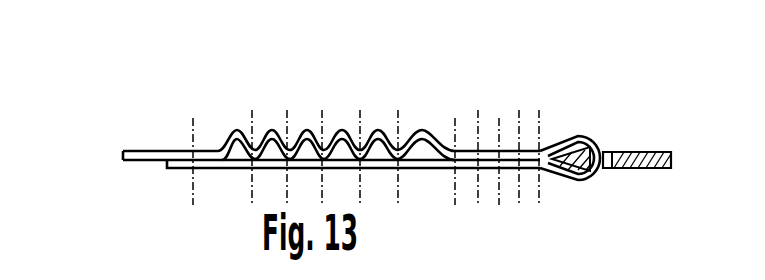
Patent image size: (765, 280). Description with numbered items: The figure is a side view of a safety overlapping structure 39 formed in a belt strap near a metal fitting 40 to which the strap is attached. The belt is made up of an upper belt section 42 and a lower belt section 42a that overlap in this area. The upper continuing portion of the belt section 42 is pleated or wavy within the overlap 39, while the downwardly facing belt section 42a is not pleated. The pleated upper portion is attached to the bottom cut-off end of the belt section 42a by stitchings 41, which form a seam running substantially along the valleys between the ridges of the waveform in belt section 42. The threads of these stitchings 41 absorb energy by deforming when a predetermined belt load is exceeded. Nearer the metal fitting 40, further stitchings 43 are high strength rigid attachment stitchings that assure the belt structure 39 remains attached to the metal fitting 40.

The safety overlapping structure 39 is at (255, 93).
The metal fitting 40 is at (630, 150).
The stitchings 41 is at (193, 118).
The belt section 42 is at (133, 150).
The belt section 42a is at (219, 169).
The further stitchings 43 is at (500, 120).